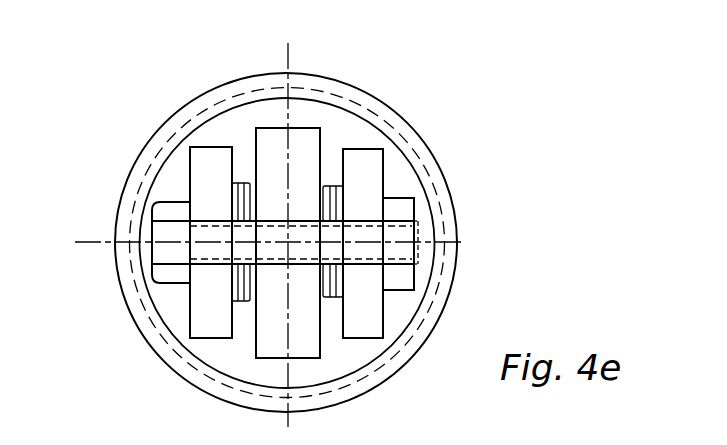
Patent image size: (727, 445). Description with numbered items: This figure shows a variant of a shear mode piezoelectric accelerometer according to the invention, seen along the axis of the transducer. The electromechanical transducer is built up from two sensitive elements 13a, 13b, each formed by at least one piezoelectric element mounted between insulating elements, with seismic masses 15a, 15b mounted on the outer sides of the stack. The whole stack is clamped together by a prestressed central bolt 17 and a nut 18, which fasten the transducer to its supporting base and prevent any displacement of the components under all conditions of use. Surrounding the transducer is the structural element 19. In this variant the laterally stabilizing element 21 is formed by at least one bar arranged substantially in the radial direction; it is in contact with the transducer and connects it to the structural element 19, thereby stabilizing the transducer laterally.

The sensitive element 13a is at (243, 176).
The sensitive element 13b is at (327, 179).
The seismic mass 15a is at (208, 162).
The seismic mass 15b is at (365, 165).
The central bolt 17 is at (165, 208).
The nut 18 is at (402, 204).
The structural element 19 is at (122, 230).
The laterally stabilizing element 21 is at (408, 240).